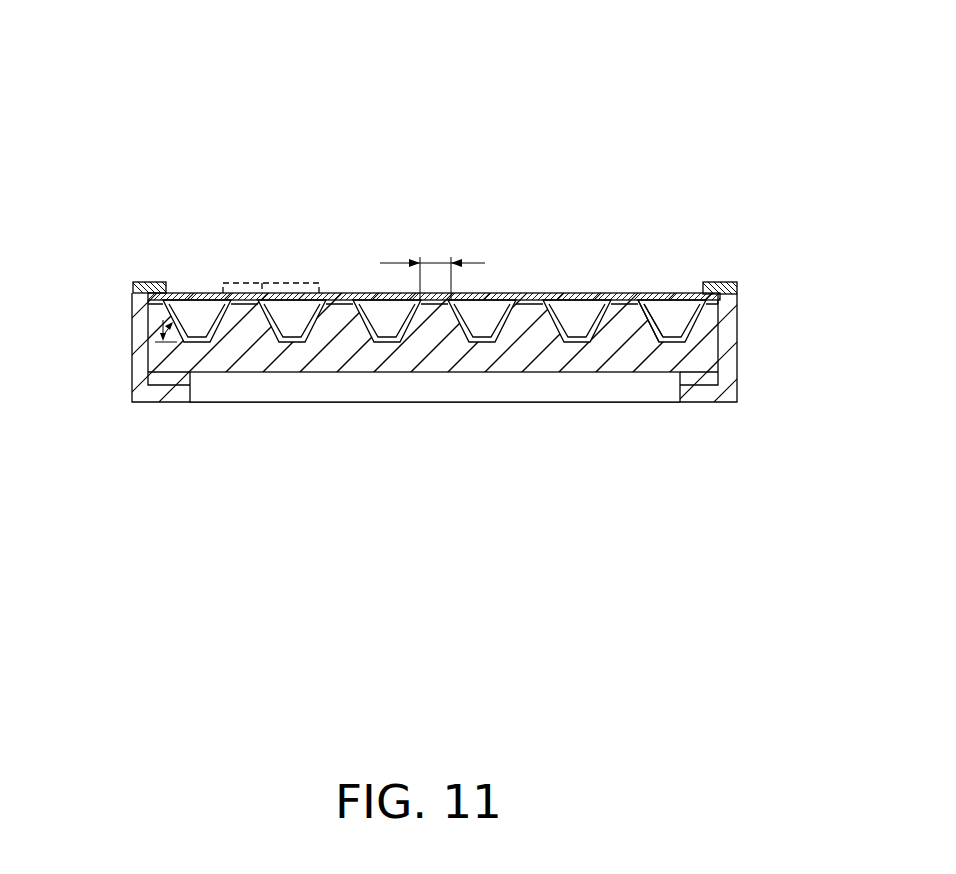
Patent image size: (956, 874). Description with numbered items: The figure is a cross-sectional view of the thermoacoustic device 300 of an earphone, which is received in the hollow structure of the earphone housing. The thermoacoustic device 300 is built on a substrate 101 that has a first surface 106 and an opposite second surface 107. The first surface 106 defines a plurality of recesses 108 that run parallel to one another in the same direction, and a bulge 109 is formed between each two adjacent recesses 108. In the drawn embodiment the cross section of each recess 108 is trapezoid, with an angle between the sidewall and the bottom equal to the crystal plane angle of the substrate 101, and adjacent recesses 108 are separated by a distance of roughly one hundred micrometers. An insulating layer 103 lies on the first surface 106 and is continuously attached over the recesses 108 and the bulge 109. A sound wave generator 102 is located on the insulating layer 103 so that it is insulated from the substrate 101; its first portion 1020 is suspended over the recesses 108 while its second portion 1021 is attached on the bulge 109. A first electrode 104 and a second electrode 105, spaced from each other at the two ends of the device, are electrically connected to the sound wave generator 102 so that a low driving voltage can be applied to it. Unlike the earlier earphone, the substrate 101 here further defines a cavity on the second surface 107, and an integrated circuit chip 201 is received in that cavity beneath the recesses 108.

The thermoacoustic device 300 is at (430, 108).
The substrate 101 is at (548, 358).
The sound wave generator 102 is at (618, 298).
The insulating layer 103 is at (133, 303).
The first electrode 104 is at (158, 285).
The second electrode 105 is at (725, 283).
The first surface 106 is at (730, 301).
The second surface 107 is at (714, 404).
The recesses 108 is at (578, 318).
The bulge 109 is at (632, 315).
The integrated circuit chip 201 is at (245, 380).
The first portion 1020 is at (302, 283).
The second portion 1021 is at (240, 283).